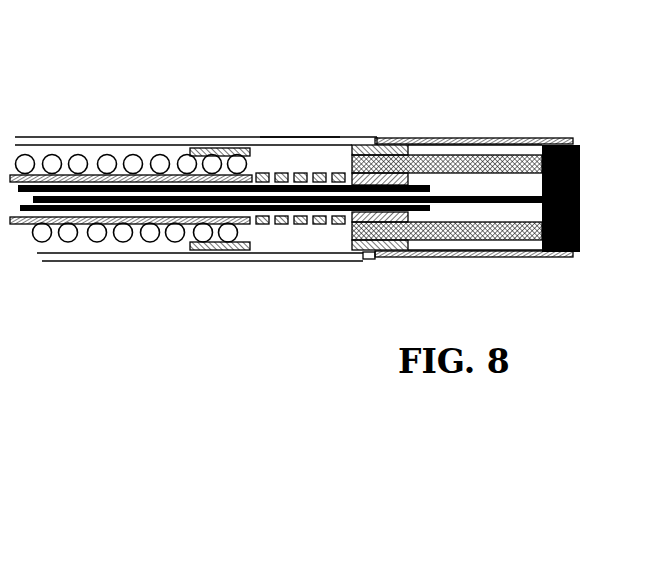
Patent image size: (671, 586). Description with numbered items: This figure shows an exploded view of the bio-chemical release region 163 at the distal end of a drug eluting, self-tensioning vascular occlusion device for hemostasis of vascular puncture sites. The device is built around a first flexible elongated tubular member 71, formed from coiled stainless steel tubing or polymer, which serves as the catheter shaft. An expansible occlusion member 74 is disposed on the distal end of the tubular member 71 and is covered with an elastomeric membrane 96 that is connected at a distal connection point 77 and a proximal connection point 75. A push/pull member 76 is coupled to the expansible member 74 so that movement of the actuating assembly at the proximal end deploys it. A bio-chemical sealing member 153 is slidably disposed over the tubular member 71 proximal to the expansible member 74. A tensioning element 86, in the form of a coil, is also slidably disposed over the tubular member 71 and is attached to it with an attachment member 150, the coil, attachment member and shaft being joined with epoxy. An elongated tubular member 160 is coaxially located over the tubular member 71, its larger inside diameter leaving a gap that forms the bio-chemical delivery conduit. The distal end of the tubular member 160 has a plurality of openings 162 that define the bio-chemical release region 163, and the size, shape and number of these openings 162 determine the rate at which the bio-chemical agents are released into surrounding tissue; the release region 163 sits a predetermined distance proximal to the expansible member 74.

The first flexible elongated tubular member 71 is at (333, 212).
The expansible occlusion member 74 is at (411, 153).
The proximal connection point 75 is at (367, 256).
The push/pull member 76 is at (49, 303).
The distal connection point 77 is at (543, 258).
The tensioning element 86 is at (133, 164).
The elastomeric membrane 96 is at (476, 138).
The attachment member 150 is at (190, 247).
The bio-chemical sealing member 153 is at (340, 138).
The elongated tubular member 160 is at (256, 154).
The openings 162 is at (303, 224).
The bio-chemical release region 163 is at (302, 118).